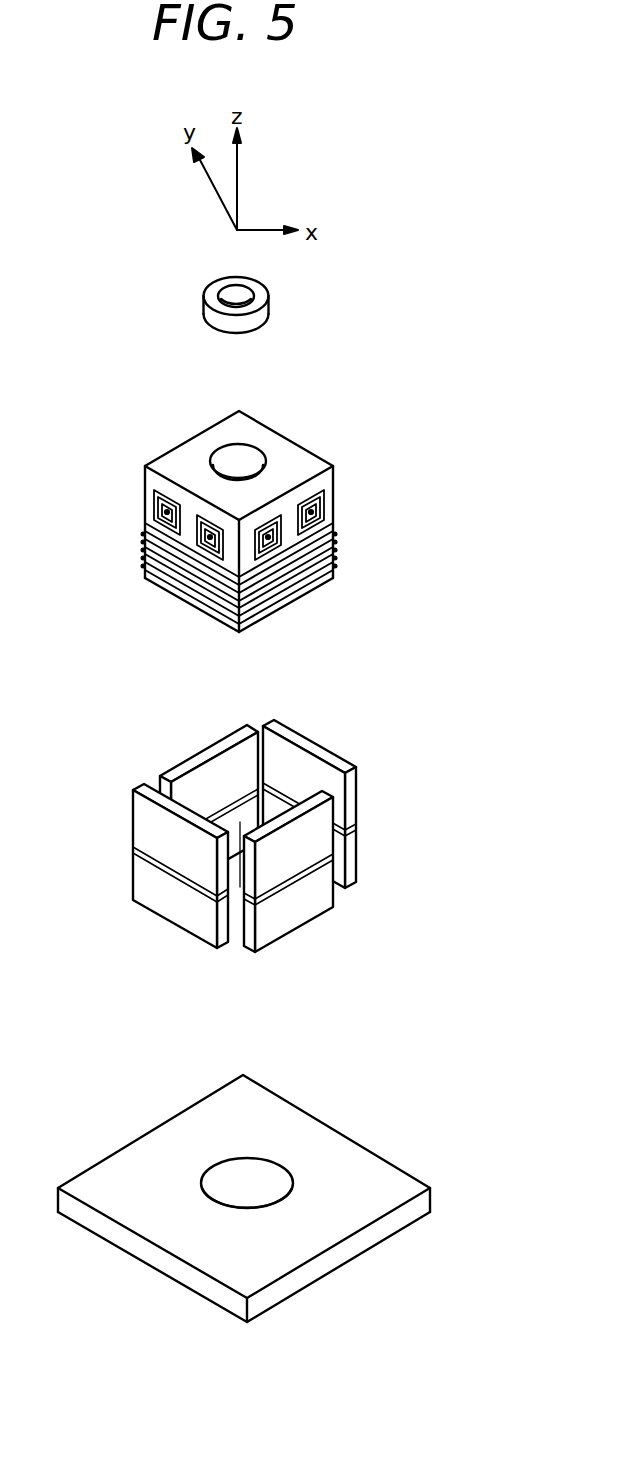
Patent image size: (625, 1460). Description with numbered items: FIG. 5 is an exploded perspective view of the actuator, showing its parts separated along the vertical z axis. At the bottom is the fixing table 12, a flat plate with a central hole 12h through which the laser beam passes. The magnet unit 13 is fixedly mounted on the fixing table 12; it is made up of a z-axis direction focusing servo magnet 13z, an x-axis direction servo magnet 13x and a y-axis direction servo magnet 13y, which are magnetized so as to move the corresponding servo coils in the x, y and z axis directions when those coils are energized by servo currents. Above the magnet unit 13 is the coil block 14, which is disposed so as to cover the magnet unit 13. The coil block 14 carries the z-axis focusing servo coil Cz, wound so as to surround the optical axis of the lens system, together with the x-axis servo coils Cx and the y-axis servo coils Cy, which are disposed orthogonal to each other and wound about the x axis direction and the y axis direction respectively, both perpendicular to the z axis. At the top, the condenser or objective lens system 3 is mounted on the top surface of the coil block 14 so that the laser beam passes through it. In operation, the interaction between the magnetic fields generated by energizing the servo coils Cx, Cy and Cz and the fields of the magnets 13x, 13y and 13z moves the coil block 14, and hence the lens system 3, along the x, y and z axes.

The condenser lens system 3 is at (247, 295).
The coil block 14 is at (232, 507).
The x-axis servo coils Cx is at (208, 520).
The y-axis servo coils Cy is at (310, 497).
The focusing servo coil Cz is at (337, 548).
The magnet unit 13 is at (286, 849).
The x-axis direction servo magnet 13x is at (213, 878).
The y-axis direction servo magnet 13y is at (300, 822).
The focusing servo magnet 13z is at (266, 922).
The fixing table 12 is at (244, 1198).
The central hole 12h is at (270, 1170).